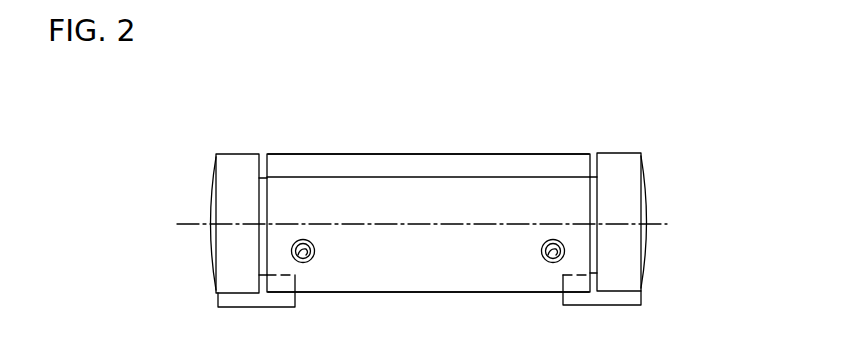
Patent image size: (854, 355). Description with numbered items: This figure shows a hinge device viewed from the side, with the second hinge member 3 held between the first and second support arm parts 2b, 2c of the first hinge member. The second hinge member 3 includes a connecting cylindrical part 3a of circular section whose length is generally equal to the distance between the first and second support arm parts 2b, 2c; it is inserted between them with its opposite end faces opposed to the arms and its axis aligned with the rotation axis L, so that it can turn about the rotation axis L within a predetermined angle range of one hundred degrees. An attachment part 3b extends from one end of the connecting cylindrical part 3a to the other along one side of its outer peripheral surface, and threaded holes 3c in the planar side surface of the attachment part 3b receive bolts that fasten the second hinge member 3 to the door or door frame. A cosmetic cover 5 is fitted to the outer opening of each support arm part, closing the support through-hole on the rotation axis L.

The first support arm part 2b is at (617, 152).
The second support arm part 2c is at (237, 153).
The second hinge member 3 is at (385, 150).
The connecting cylindrical part 3a is at (445, 153).
The attachment part 3b is at (422, 275).
The threaded holes 3c is at (308, 263).
The cosmetic cover 5 is at (209, 248).
The rotation axis L is at (662, 222).